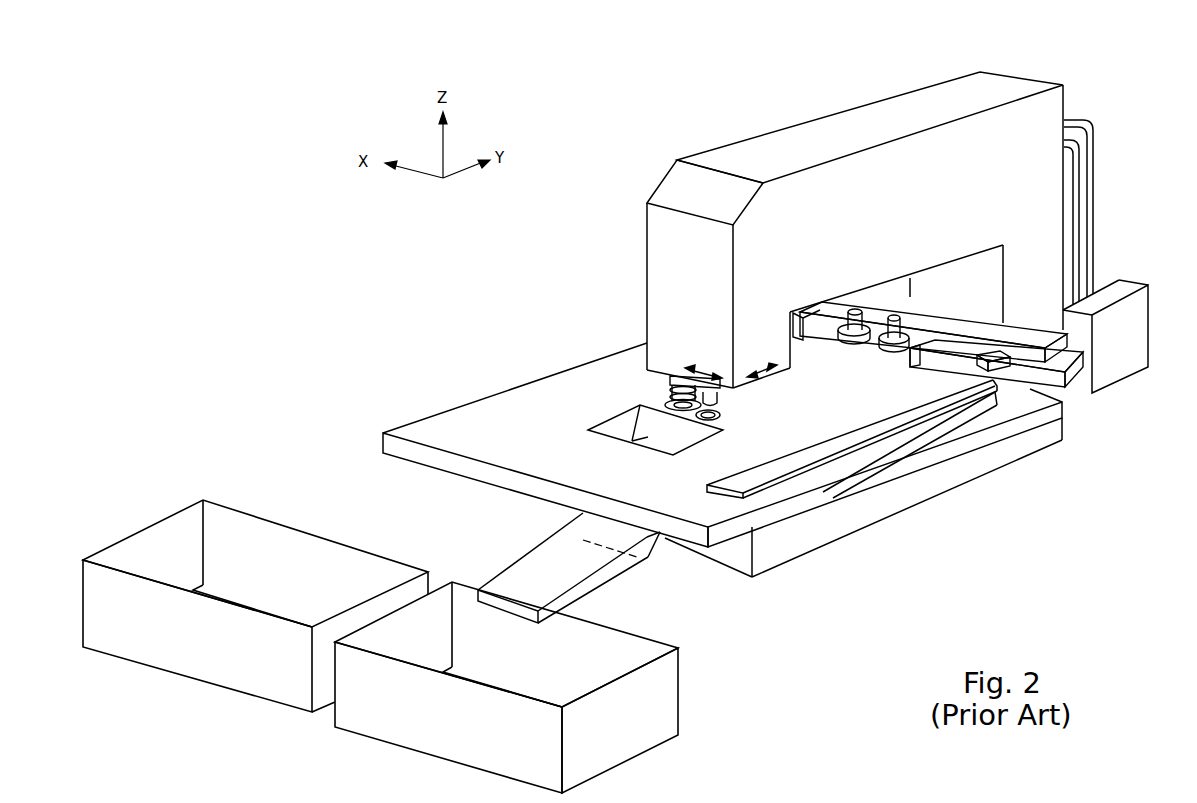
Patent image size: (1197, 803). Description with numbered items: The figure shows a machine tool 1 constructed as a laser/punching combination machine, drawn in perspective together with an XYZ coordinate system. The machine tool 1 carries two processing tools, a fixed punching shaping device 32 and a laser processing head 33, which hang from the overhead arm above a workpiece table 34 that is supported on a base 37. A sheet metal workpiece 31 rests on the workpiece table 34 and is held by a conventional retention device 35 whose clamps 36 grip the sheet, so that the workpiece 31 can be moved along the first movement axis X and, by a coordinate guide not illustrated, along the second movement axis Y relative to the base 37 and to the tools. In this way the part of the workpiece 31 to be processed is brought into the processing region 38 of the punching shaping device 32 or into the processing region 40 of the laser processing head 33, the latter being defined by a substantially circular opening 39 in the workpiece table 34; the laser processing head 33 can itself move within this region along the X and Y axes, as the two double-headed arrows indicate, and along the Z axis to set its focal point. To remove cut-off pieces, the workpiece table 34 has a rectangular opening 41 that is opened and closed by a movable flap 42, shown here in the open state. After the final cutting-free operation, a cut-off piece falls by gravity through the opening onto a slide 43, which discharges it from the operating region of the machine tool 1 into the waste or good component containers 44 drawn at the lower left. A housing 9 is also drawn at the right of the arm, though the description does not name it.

The machine tool 1 is at (749, 116).
The control box 9 is at (1122, 353).
The workpiece 31 is at (850, 432).
The punching shaping device 32 is at (648, 388).
The laser processing head 33 is at (717, 398).
The workpiece table 34 is at (437, 433).
The retention device 35 is at (1078, 378).
The clamps 36 is at (940, 355).
The base 37 is at (963, 452).
The processing region of the punching shaping device 38 is at (645, 393).
The circular opening 39 is at (710, 425).
The processing region of the laser processing head 40 is at (735, 434).
The rectangular opening 41 is at (622, 425).
The movable flap 42 is at (647, 437).
The slide 43 is at (637, 540).
The containers 44 is at (357, 720).